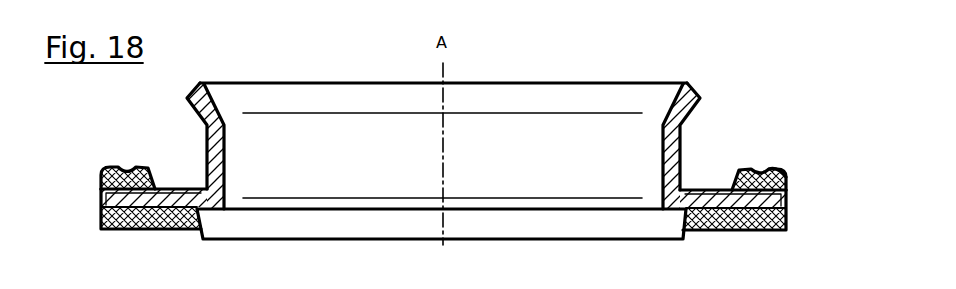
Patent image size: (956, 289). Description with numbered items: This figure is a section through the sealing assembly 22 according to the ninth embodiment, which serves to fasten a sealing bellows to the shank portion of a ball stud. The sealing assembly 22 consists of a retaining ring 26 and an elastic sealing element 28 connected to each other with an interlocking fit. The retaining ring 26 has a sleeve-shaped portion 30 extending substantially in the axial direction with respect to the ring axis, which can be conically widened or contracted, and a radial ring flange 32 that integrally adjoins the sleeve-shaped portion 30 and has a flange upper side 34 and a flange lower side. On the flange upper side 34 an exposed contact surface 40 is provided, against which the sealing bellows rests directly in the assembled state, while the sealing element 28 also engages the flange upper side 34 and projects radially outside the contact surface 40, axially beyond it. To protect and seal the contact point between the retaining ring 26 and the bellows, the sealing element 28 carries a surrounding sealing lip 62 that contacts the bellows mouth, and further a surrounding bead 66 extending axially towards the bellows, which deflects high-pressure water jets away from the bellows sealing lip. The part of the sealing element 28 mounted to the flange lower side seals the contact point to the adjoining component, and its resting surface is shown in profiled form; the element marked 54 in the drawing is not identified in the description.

The sealing assembly 22 is at (590, 72).
The retaining ring 26 is at (227, 148).
The sleeve-shaped portion 30 is at (668, 134).
The flange upper side 34 is at (181, 182).
The contact surface 40 is at (707, 188).
The sealing lip 62 is at (740, 168).
The bead 66 is at (777, 168).
The sealing element 28 is at (787, 210).
The ring flange 32 is at (727, 200).
The elastomer seal body 54 is at (100, 195).